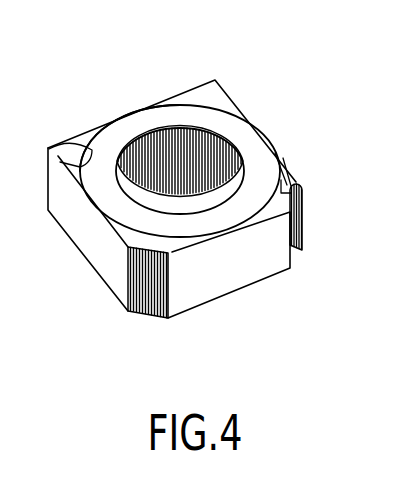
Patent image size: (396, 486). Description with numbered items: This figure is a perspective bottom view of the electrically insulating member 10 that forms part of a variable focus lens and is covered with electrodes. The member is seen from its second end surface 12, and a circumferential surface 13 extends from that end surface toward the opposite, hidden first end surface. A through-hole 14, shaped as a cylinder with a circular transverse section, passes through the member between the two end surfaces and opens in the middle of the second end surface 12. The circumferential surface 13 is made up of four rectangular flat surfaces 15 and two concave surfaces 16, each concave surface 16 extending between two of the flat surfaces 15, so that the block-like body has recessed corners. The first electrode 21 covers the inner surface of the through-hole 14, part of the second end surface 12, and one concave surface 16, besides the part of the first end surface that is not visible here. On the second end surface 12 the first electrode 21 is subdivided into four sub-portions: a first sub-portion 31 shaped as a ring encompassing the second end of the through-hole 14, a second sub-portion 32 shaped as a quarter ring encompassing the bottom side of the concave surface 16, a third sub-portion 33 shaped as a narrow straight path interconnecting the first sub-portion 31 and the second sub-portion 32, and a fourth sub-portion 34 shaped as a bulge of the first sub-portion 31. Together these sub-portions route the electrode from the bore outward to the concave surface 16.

The electrically insulating member 10 is at (199, 189).
The second end surface 12 is at (217, 97).
The circumferential surface 13 is at (75, 208).
The through-hole 14 is at (186, 203).
The flat surface 15 is at (257, 255).
The concave surface 16 is at (307, 213).
The first electrode 21 is at (162, 115).
The first sub-portion 31 is at (123, 127).
The second sub-portion 32 is at (293, 183).
The third sub-portion 33 is at (286, 176).
The fourth sub-portion 34 is at (72, 148).